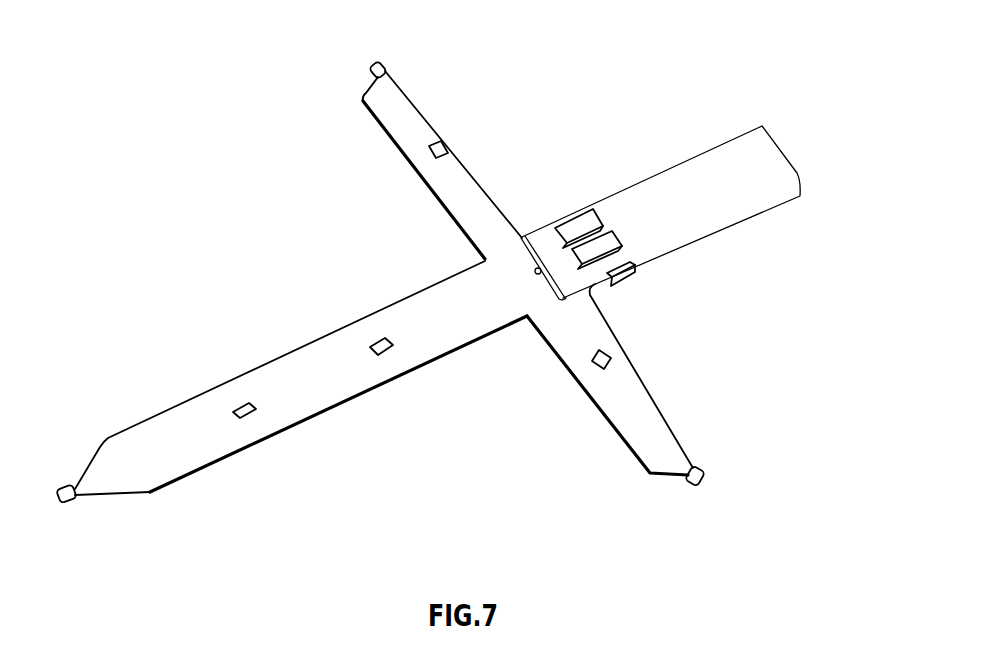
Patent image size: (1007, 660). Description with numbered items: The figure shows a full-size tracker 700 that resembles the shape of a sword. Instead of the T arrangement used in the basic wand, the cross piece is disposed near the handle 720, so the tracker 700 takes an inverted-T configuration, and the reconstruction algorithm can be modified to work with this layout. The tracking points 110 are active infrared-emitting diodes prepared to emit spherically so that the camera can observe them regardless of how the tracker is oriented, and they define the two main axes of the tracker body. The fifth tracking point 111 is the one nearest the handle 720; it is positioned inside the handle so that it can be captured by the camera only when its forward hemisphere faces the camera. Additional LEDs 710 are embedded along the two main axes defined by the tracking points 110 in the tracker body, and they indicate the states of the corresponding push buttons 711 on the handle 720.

The tracker 700 is at (217, 472).
The tracking points 110 is at (367, 83).
The fifth tracking point 111 is at (536, 271).
The additional LEDs 710 is at (448, 145).
The push buttons 711 is at (600, 212).
The handle 720 is at (719, 143).